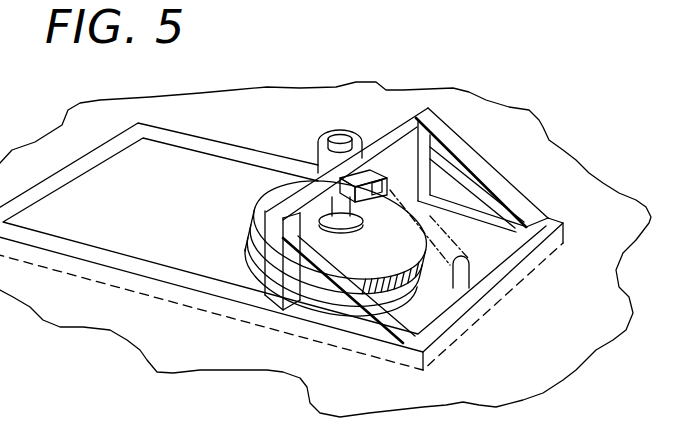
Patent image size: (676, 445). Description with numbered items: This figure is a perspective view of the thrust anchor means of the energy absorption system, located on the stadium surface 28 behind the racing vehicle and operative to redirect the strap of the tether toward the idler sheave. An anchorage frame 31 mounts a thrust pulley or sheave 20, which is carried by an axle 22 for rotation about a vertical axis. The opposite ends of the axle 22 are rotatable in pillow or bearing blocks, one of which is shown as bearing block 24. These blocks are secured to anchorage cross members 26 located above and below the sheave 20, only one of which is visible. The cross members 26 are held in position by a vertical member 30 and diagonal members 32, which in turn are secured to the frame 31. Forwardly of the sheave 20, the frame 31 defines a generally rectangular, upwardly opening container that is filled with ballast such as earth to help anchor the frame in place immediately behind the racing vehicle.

The thrust pulley or sheave 20 is at (268, 202).
The axle 22 is at (341, 134).
The pillow or bearing block 24 is at (318, 137).
The anchorage cross member 26 is at (404, 118).
The stadium surface 28 is at (584, 177).
The vertical member 30 is at (265, 297).
The anchorage frame 31 is at (66, 178).
The diagonal member 32 is at (508, 195).